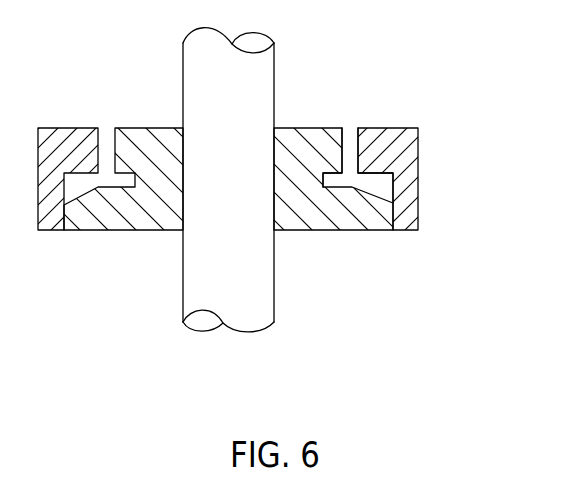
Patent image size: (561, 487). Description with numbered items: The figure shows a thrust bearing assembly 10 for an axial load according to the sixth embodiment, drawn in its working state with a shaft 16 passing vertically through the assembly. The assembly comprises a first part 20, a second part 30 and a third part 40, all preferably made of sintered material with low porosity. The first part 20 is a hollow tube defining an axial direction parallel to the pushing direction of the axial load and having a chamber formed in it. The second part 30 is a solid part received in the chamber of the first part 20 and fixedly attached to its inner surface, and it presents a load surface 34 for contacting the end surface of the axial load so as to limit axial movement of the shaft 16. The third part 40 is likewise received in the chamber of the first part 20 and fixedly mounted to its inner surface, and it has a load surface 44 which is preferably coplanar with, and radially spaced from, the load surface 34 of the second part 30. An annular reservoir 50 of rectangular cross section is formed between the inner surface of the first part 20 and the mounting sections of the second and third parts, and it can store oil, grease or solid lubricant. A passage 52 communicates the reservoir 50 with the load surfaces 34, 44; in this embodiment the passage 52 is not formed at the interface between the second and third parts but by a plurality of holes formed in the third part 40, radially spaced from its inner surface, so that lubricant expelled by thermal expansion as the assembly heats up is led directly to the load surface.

The thrust bearing assembly 10 is at (467, 310).
The shaft 16 is at (258, 288).
The first part 20 is at (354, 121).
The third part 40 is at (354, 121).
The second part 30 is at (145, 207).
The load surface 34 is at (152, 163).
The load surface 44 is at (330, 127).
The annular reservoir 50 is at (383, 185).
The passage 52 is at (348, 137).